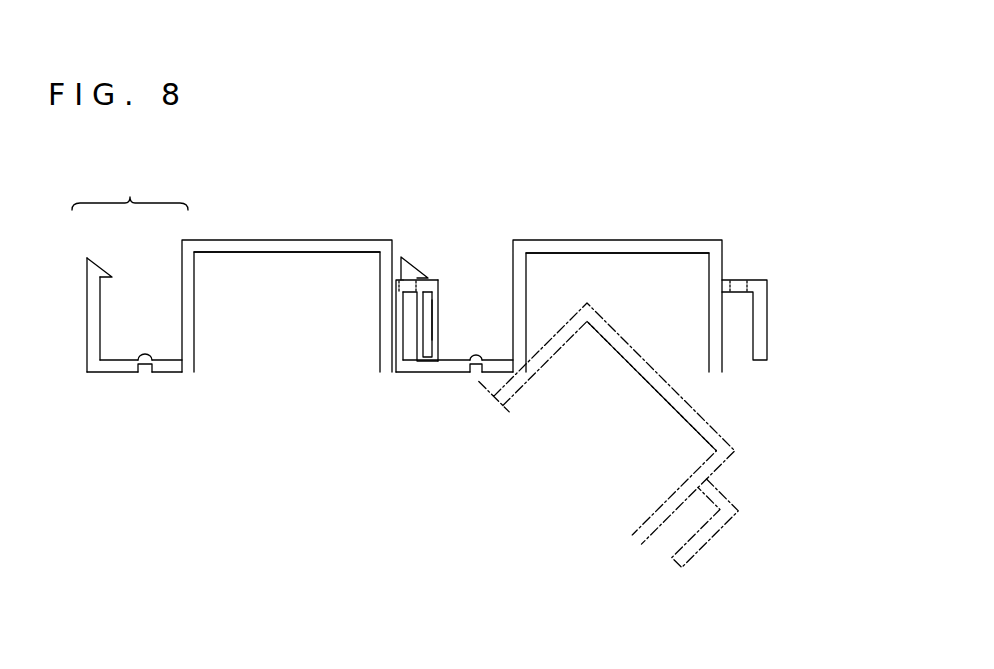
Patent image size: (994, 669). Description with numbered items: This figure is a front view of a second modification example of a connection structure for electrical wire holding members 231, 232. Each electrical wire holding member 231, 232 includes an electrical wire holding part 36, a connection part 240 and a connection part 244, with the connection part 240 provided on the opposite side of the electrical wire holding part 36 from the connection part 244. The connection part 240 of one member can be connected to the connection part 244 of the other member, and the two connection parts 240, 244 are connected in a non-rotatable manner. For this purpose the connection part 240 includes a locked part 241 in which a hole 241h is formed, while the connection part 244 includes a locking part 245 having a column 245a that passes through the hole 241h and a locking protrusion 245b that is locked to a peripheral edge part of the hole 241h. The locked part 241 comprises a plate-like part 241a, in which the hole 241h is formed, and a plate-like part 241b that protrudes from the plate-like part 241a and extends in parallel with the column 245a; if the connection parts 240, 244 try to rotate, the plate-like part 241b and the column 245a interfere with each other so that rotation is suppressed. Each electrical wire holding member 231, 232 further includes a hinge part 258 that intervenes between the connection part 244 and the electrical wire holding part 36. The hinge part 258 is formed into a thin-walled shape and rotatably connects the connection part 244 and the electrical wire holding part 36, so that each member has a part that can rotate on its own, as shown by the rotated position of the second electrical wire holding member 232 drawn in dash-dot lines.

The electrical wire holding part 36 is at (311, 253).
The electrical wire holding member 231 is at (273, 239).
The electrical wire holding member 232 is at (613, 239).
The connection part 240 is at (442, 300).
The locked part 241 is at (437, 337).
The plate-like part 241a is at (433, 281).
The plate-like part 241b is at (437, 316).
The hole 241h is at (396, 280).
The connection part 244 is at (112, 378).
The locking part 245 is at (398, 320).
The column 245a is at (95, 298).
The locking protrusion 245b is at (93, 261).
The hinge part 258 is at (146, 355).